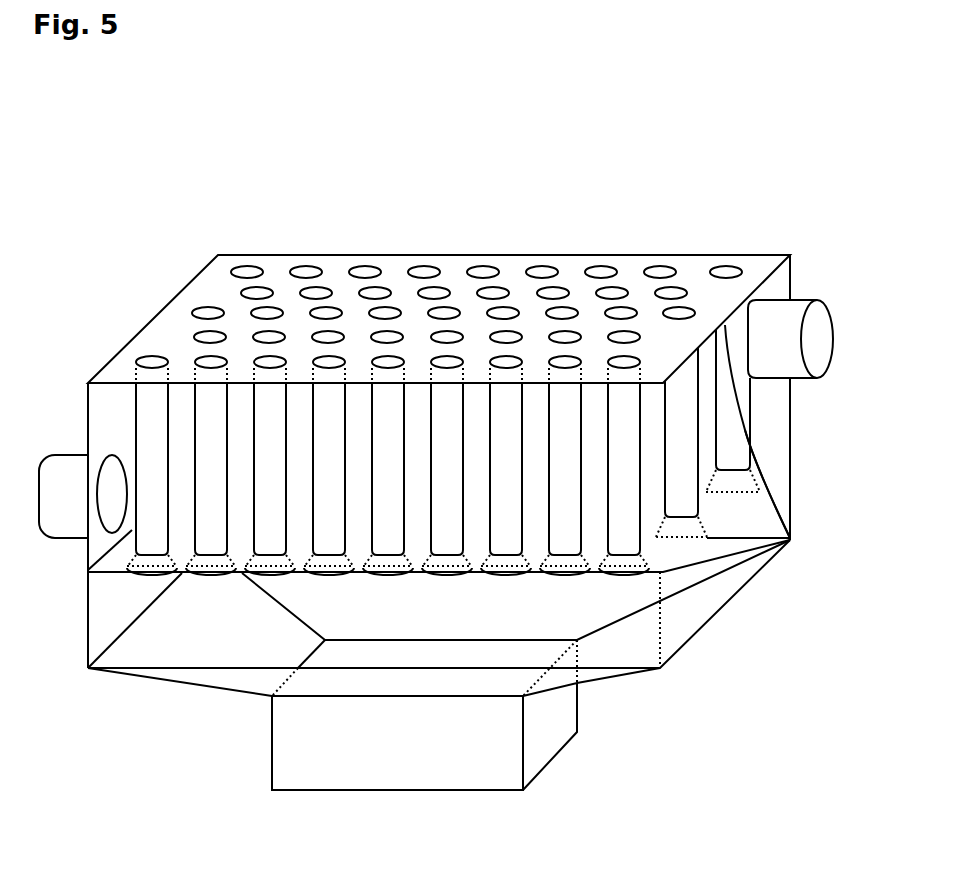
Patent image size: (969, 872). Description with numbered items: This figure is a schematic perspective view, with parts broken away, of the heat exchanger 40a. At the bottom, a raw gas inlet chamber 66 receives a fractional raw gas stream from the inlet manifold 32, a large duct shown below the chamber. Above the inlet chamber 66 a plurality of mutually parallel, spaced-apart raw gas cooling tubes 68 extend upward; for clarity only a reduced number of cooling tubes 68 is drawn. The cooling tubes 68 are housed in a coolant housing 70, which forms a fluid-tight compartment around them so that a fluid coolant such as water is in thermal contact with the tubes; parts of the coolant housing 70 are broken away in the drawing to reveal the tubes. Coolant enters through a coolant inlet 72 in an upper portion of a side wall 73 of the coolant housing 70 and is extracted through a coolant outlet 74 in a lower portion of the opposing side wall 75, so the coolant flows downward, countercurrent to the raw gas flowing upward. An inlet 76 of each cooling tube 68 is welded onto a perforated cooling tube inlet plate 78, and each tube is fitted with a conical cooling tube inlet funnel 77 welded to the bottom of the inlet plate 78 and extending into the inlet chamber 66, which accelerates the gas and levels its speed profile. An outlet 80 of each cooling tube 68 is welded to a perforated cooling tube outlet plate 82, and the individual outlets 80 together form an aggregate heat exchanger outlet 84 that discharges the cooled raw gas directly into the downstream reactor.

The inlet manifold 32 is at (537, 753).
The heat exchanger 40a is at (758, 95).
The raw gas inlet chamber 66 is at (535, 617).
The raw gas cooling tube 68 is at (134, 423).
The coolant housing 70 is at (786, 461).
The coolant inlet 72 is at (822, 325).
The side wall 73 is at (773, 417).
The coolant outlet 74 is at (65, 530).
The opposing side wall 75 is at (100, 432).
The cooling tube inlet 76 is at (647, 550).
The cooling tube inlet funnel 77 is at (390, 578).
The cooling tube inlet plate 78 is at (715, 517).
The cooling tube outlet 80 is at (660, 268).
The cooling tube outlet plate 82 is at (568, 263).
The aggregate heat exchanger outlet 84 is at (366, 192).